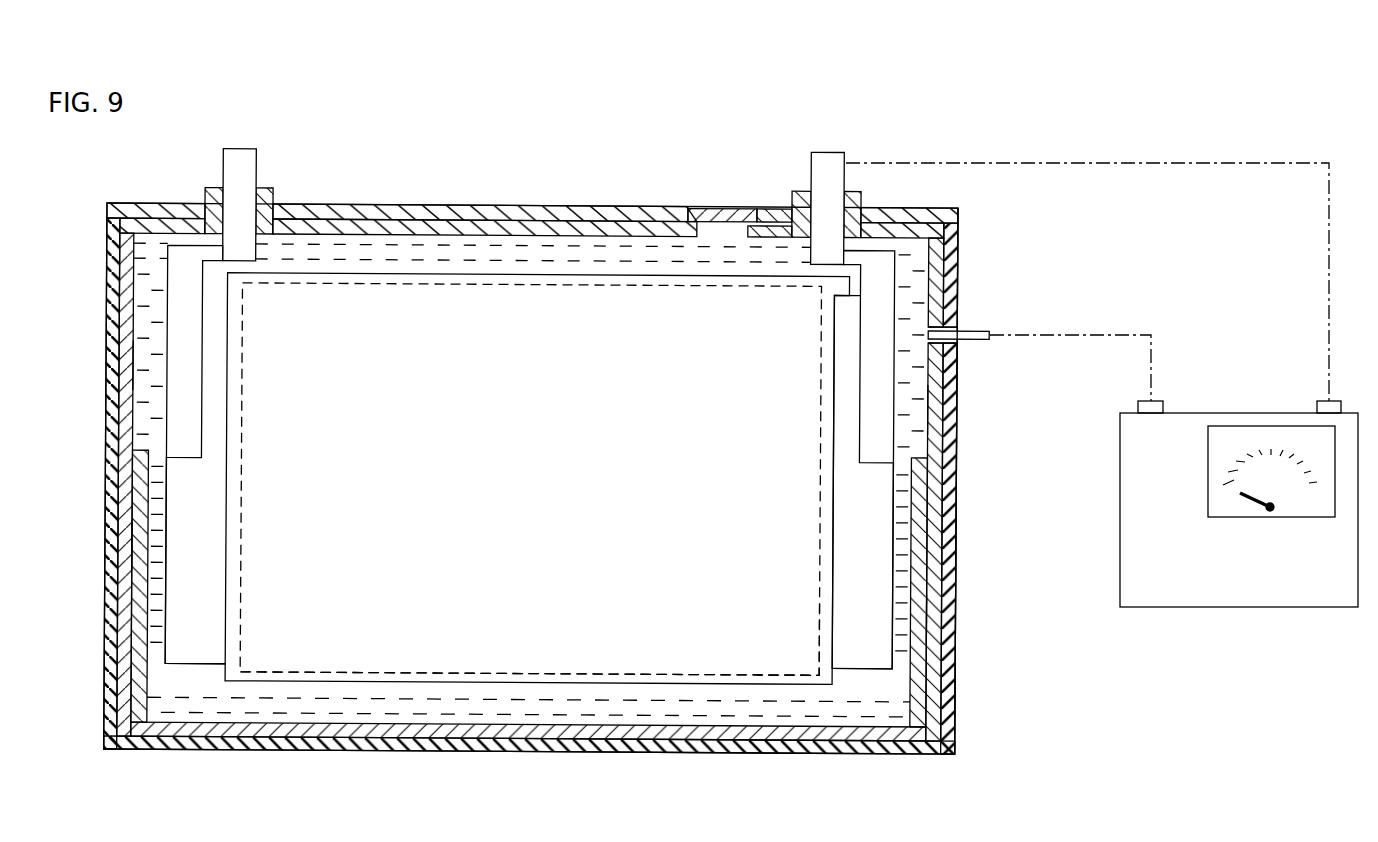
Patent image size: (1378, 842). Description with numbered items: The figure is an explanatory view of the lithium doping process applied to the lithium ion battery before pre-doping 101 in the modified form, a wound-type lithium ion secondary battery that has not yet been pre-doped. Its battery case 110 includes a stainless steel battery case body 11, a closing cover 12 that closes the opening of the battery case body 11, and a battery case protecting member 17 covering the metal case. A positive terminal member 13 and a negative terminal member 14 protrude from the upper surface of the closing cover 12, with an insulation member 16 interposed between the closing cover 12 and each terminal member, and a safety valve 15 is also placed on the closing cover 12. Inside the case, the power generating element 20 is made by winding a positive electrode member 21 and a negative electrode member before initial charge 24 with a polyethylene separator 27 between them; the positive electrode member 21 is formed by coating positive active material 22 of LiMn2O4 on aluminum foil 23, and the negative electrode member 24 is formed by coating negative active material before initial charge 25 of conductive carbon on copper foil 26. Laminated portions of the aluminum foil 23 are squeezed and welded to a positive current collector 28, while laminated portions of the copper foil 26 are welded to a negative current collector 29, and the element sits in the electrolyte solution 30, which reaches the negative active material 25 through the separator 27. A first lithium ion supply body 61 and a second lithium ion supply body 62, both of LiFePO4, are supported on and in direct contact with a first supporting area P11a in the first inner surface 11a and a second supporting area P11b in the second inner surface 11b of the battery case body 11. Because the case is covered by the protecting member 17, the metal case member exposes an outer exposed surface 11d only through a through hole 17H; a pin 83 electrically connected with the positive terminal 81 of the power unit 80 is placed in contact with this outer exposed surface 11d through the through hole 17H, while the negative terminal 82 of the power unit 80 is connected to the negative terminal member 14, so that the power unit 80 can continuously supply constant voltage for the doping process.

The lithium ion battery before pre-doping 101 is at (456, 171).
The battery case body 11 is at (943, 268).
The first inner surface 11a is at (925, 405).
The second inner surface 11b is at (135, 367).
The outer exposed surface 11d is at (945, 340).
The first supporting area P11a is at (926, 613).
The second supporting area P11b is at (135, 548).
The closing cover 12 is at (155, 215).
The positive terminal member 13 is at (240, 158).
The negative terminal member 14 is at (829, 160).
The safety valve 15 is at (712, 210).
The insulation member 16 is at (793, 192).
The battery case protecting member 17 is at (948, 297).
The through hole 17H is at (945, 327).
The battery case 110 is at (1040, 185).
The power generating element 20 is at (613, 645).
The positive electrode member 21 is at (230, 803).
The positive active material 22 is at (315, 648).
The aluminum foil 23 is at (203, 648).
The negative electrode member before initial charge 24 is at (768, 806).
The negative active material before initial charge 25 is at (785, 660).
The copper foil 26 is at (858, 657).
The separator 27 is at (512, 645).
The positive current collector 28 is at (183, 280).
The negative current collector 29 is at (877, 438).
The electrolyte solution 30 is at (678, 715).
The first lithium ion supply body 61 is at (925, 680).
The second lithium ion supply body 62 is at (135, 707).
The power unit 80 is at (1245, 590).
The positive terminal 81 is at (1163, 405).
The negative terminal 82 is at (1318, 405).
The pin 83 is at (980, 325).